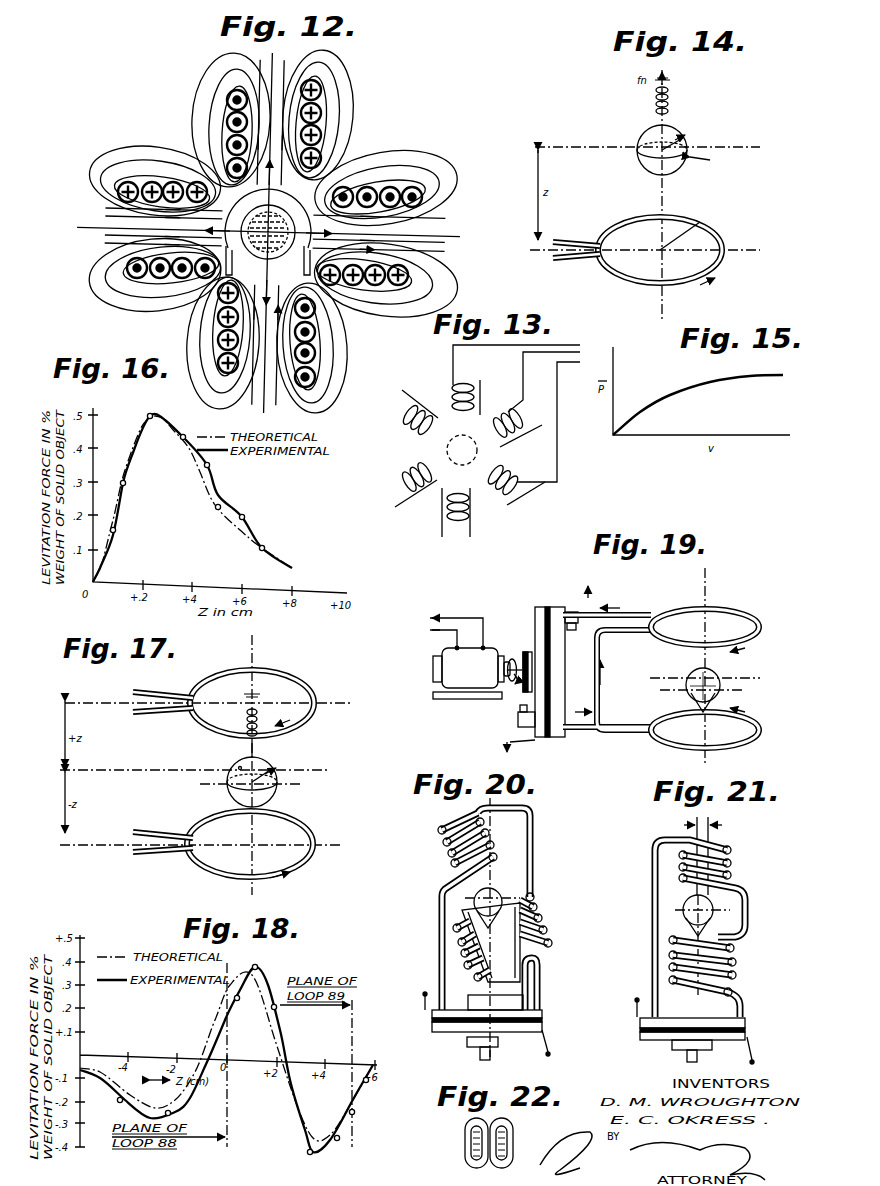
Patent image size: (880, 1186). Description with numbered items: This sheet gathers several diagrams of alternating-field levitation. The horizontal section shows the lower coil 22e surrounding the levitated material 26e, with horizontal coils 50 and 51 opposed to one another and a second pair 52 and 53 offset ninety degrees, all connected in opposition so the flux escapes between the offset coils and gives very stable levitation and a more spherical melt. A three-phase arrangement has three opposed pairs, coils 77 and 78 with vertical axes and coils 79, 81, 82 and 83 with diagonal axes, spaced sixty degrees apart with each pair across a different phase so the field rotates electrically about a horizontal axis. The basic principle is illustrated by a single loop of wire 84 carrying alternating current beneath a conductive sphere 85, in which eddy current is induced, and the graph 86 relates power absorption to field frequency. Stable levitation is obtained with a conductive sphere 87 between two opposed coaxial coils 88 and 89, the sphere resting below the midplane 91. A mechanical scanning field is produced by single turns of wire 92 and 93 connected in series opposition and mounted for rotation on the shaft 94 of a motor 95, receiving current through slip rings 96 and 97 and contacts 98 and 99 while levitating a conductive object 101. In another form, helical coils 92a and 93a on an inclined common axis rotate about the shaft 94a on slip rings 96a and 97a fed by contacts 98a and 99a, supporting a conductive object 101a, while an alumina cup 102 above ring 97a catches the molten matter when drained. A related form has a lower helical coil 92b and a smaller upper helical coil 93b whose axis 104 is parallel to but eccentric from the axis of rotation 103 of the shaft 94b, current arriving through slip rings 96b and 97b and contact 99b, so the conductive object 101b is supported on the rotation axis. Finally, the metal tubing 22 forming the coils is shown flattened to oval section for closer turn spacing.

In FIG. 12, the lower coil 22e is at (290, 203).
In FIG. 12, the material 26e is at (268, 232).
In FIG. 12, the horizontal coil 50 is at (133, 272).
In FIG. 12, the horizontal coil 51 is at (420, 192).
In FIG. 12, the horizontal coil 52 is at (236, 366).
In FIG. 12, the horizontal coil 53 is at (244, 96).
In FIG. 13, the coil 77 is at (458, 520).
In FIG. 13, the coil 78 is at (466, 385).
In FIG. 13, the coil 79 is at (378, 482).
In FIG. 13, the coil 81 is at (518, 418).
In FIG. 13, the coil 82 is at (515, 490).
In FIG. 13, the coil 83 is at (408, 415).
In FIG. 14, the loop of wire 84 is at (636, 282).
In FIG. 14, the sphere 85 is at (640, 130).
In FIG. 15, the graph 86 is at (700, 380).
In FIG. 17, the conductive sphere 87 is at (272, 796).
In FIG. 17, the coil 88 is at (305, 862).
In FIG. 17, the coil 89 is at (312, 690).
In FIG. 17, the midplane 91 is at (330, 770).
In FIG. 19, the single turn of wire 92 is at (752, 742).
In FIG. 19, the single turn of wire 93 is at (740, 612).
In FIG. 19, the shaft 94 is at (514, 657).
In FIG. 19, the motor 95 is at (452, 678).
In FIG. 19, the slip ring 96 is at (535, 697).
In FIG. 19, the slip ring 97 is at (565, 650).
In FIG. 19, the contact 98 is at (540, 745).
In FIG. 19, the contact 99 is at (557, 606).
In FIG. 19, the conductive object 101 is at (718, 678).
In FIG. 20, the coil 93a is at (438, 828).
In FIG. 20, the coil 92a is at (552, 930).
In FIG. 20, the conductive object 101a is at (474, 900).
In FIG. 20, the alumina cup 102 is at (462, 914).
In FIG. 20, the slip ring 97a is at (455, 1000).
In FIG. 20, the slip ring 96a is at (445, 1032).
In FIG. 20, the shaft 94a is at (492, 1055).
In FIG. 20, the contact 99a is at (425, 1006).
In FIG. 20, the contact 98a is at (548, 1040).
In FIG. 21, the axis of rotation 103 is at (690, 822).
In FIG. 21, the axis of the coils 104 is at (715, 832).
In FIG. 21, the upper helical coil 93b is at (735, 860).
In FIG. 21, the conductive object 101b is at (683, 905).
In FIG. 21, the lower helical coil 92b is at (740, 950).
In FIG. 21, the slip ring 97b is at (715, 1020).
In FIG. 21, the slip ring 96b is at (648, 1038).
In FIG. 21, the shaft 94b is at (686, 1058).
In FIG. 21, the contact 99b is at (775, 1043).
In FIG. 22, the metal tubing 22 is at (465, 1135).